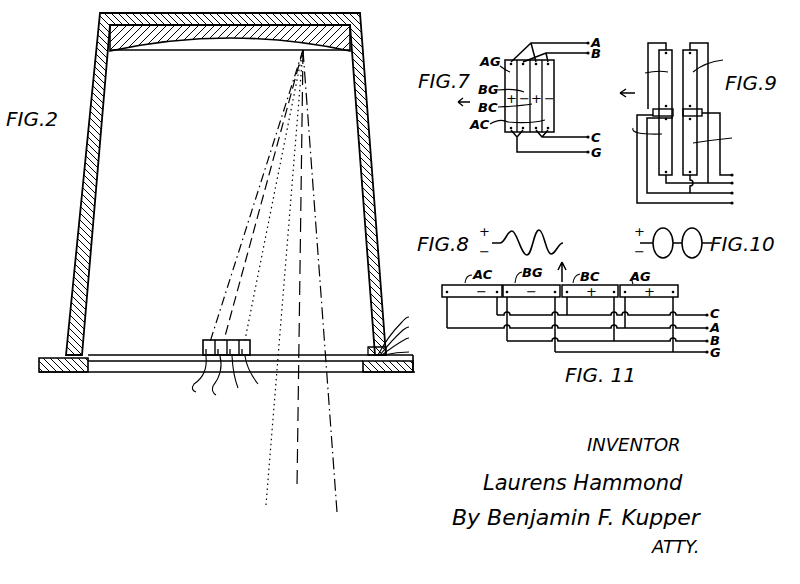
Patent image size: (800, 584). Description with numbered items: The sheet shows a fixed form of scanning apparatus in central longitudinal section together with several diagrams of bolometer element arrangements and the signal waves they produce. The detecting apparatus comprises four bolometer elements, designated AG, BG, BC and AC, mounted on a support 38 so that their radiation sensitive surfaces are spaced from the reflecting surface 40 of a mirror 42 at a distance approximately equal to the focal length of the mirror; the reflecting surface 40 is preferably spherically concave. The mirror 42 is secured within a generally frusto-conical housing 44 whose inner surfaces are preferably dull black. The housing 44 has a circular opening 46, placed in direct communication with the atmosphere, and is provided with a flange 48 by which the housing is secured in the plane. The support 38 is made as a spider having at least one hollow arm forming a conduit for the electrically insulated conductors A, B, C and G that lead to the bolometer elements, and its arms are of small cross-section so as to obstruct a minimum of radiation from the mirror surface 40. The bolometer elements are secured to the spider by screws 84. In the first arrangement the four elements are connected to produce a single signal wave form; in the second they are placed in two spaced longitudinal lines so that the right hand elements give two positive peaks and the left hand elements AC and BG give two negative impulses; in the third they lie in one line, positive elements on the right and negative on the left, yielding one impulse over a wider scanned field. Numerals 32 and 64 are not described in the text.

In FIG. 2, the housing 32 is at (59, 5).
In FIG. 2, the reflecting surface 40 is at (250, 45).
In FIG. 2, the mirror 42 is at (184, 38).
In FIG. 2, the housing 44 is at (372, 130).
In FIG. 2, the support 38 is at (147, 362).
In FIG. 2, the screws 84 is at (212, 356).
In FIG. 2, the circular opening 46 is at (352, 366).
In FIG. 2, the flange 48 is at (415, 372).
In FIG. 9, the electrode assembly 64 is at (672, 8).